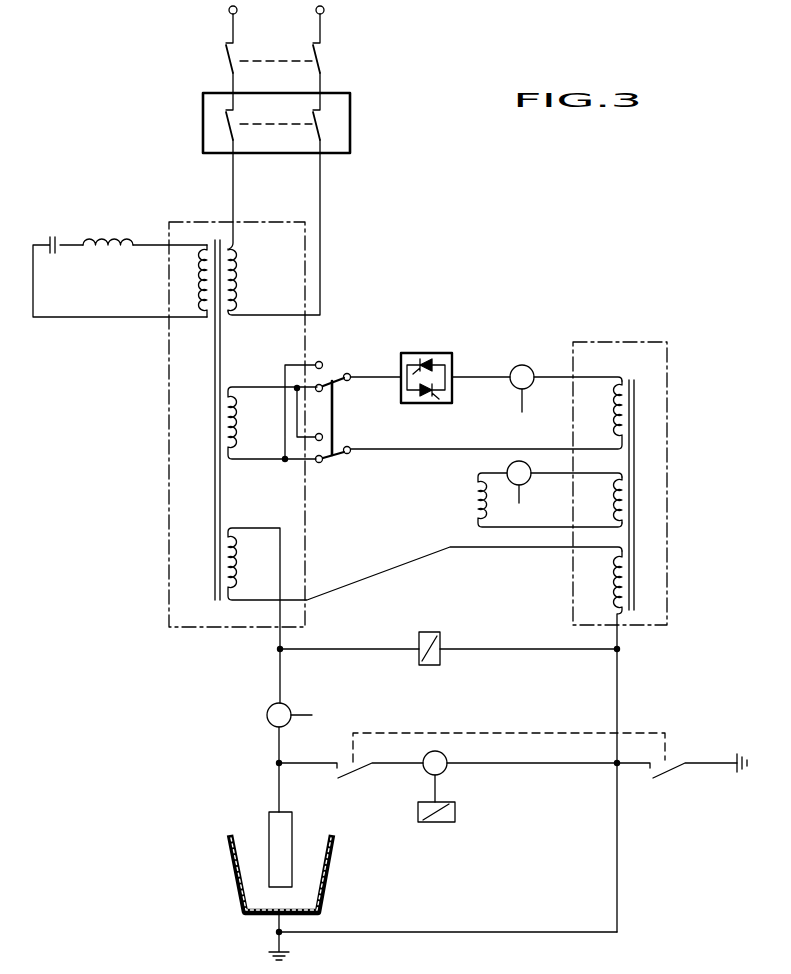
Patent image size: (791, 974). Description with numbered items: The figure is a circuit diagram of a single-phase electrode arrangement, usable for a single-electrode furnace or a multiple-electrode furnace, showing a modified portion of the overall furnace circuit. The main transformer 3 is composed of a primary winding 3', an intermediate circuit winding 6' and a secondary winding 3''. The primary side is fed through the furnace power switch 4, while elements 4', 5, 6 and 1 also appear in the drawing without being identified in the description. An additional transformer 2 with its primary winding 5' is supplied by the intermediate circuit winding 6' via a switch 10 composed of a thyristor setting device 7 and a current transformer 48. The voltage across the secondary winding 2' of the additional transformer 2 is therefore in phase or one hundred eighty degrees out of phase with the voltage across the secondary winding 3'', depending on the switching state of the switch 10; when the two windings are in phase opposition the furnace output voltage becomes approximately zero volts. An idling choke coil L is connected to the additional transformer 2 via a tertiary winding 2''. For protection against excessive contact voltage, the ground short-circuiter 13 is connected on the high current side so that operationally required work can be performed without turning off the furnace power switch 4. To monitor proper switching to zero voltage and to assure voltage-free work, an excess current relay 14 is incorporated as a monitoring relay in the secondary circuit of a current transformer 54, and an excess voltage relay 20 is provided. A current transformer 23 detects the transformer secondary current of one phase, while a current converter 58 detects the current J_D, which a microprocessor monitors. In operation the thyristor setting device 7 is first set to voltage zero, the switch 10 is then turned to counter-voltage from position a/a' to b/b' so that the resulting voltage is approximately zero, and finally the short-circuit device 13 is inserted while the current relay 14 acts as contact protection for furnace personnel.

The crucible with electrode 1 is at (234, 866).
The additional transformer 2 is at (633, 483).
The secondary winding 2' is at (635, 741).
The tertiary winding 2'' is at (637, 500).
The main transformer 3 is at (217, 424).
The primary winding 3' is at (249, 280).
The secondary winding 3'' is at (406, 588).
The furnace power switch 4 is at (255, 123).
The contactor switch 4' is at (246, 57).
The transformer winding 5 is at (190, 281).
The primary winding 5' is at (503, 415).
The resonant circuit 6 is at (120, 262).
The intermediate circuit winding 6' is at (251, 423).
The thyristor setting device 7 is at (418, 353).
The switch 10 is at (339, 462).
The ground short-circuiter 13 is at (340, 780).
The current relay 14 is at (438, 822).
The excess voltage relay 20 is at (440, 634).
The current transformer 23 is at (270, 708).
The current transformer 48 is at (522, 365).
The current transformer 54 is at (435, 751).
The current converter 58 is at (519, 461).
The idling choke coil L is at (536, 500).